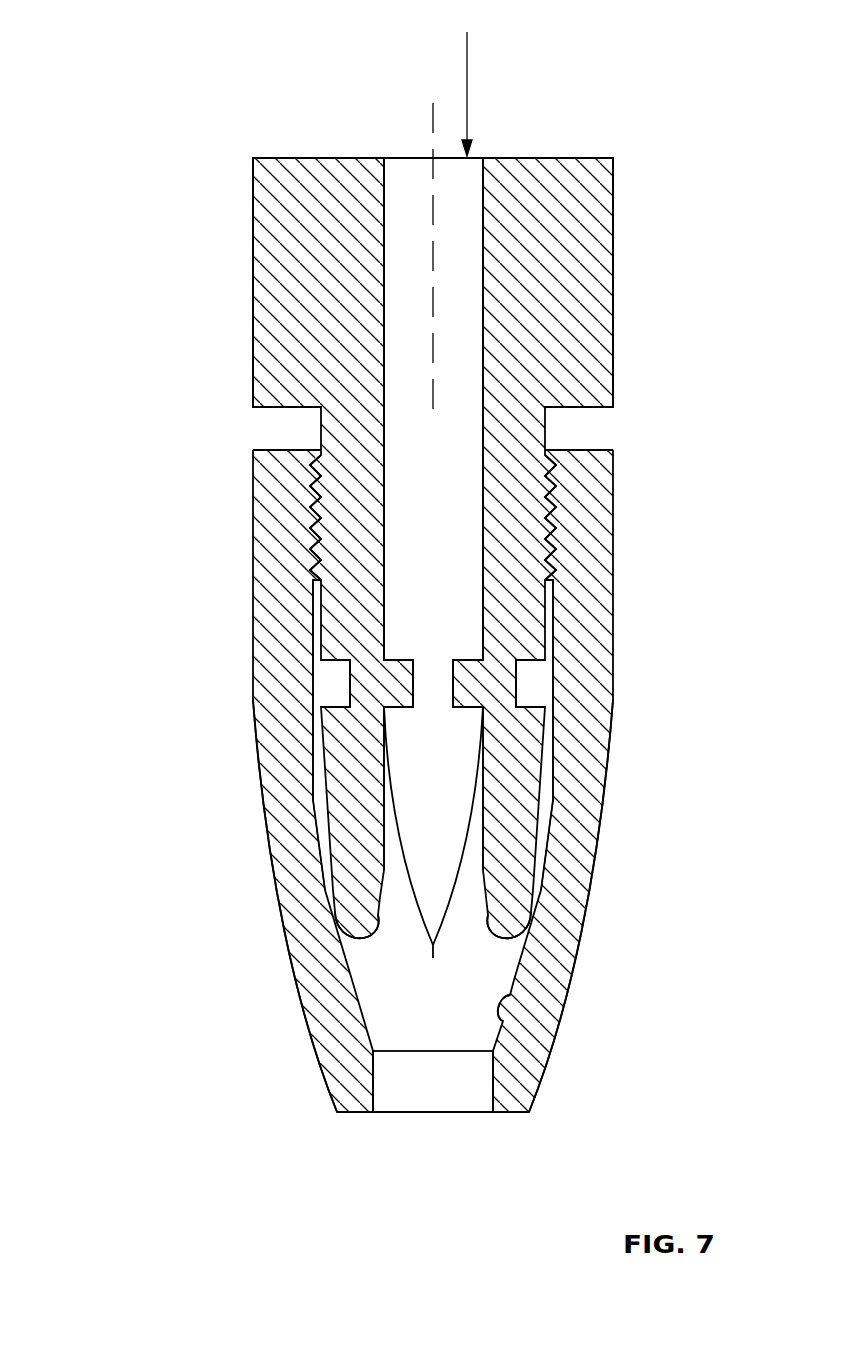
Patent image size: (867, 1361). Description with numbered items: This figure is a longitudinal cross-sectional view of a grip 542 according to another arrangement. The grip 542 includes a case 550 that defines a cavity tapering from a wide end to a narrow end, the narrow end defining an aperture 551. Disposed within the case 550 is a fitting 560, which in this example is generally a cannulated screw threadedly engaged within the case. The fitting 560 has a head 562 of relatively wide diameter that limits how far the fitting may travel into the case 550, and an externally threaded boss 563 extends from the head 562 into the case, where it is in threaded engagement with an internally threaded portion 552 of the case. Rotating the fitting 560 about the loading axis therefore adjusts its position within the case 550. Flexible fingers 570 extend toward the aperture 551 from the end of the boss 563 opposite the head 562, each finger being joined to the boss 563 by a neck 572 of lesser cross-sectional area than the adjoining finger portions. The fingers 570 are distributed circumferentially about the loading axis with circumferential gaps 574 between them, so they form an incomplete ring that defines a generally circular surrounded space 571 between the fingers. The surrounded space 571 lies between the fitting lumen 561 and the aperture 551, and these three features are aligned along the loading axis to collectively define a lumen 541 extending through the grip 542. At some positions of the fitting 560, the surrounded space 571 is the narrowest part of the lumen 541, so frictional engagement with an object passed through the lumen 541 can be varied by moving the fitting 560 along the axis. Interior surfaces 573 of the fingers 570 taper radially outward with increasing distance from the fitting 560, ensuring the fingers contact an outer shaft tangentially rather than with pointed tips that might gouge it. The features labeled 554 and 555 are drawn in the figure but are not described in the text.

The lumen 541 is at (471, 78).
The grip 542 is at (176, 147).
The case 550 is at (388, 1113).
The aperture 551 is at (449, 1098).
The internally threaded portion 552 is at (253, 492).
The tapered outer surface 554 is at (610, 838).
The retaining protrusion 555 is at (508, 1003).
The fitting 560 is at (402, 157).
The fitting lumen 561 is at (461, 470).
The head 562 is at (253, 315).
The externally threaded boss 563 is at (317, 553).
The flexible fingers 570 is at (355, 947).
The surrounded space 571 is at (461, 757).
The neck 572 is at (350, 668).
The interior surfaces 573 is at (520, 948).
The circumferential gaps 574 is at (470, 895).